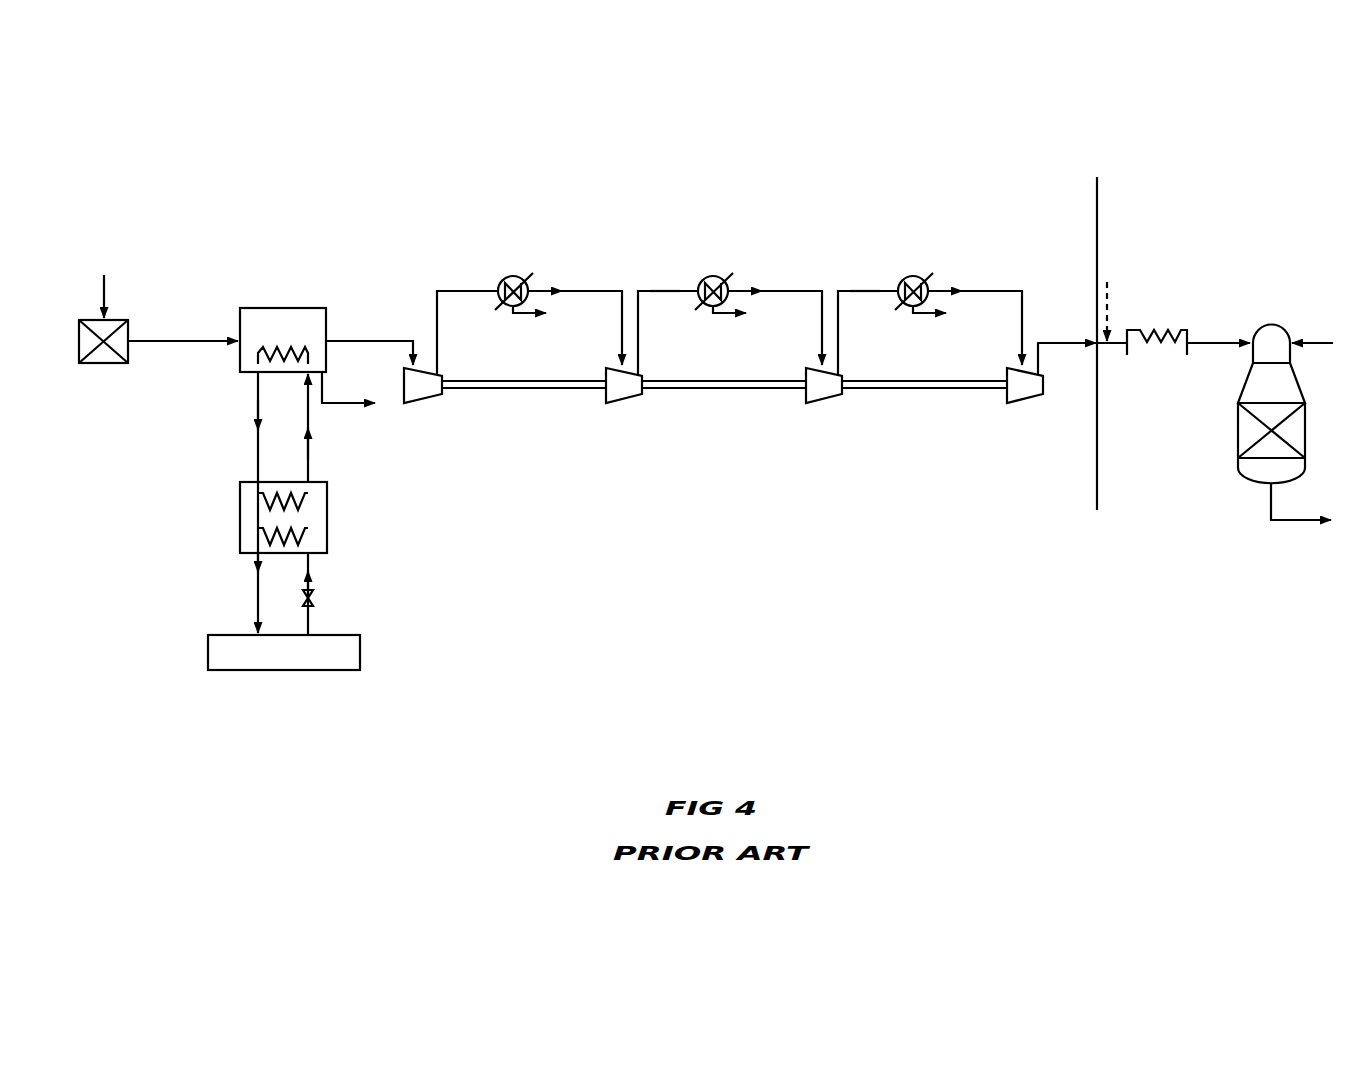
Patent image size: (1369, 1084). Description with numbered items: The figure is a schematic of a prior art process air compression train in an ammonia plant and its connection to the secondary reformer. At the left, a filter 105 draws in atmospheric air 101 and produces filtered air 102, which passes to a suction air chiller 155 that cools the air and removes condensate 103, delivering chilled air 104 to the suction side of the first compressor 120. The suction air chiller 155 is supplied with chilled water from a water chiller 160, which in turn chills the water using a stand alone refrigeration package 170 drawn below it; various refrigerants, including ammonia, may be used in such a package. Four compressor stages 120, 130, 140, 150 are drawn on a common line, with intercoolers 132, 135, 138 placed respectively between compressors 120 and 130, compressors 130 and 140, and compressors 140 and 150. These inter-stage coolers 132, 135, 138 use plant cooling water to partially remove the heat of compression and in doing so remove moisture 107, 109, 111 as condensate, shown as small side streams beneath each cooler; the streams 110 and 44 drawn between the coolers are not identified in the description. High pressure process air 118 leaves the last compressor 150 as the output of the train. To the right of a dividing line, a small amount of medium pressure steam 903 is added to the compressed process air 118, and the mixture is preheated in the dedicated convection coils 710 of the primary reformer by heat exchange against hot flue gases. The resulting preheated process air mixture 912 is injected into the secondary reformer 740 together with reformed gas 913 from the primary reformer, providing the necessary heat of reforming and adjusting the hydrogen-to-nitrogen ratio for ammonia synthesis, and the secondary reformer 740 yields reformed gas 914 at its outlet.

The atmospheric air 101 is at (106, 293).
The filtered air 102 is at (168, 342).
The condensate 103 is at (338, 410).
The chilled air 104 is at (370, 338).
The filter 105 is at (90, 318).
The moisture 107 is at (520, 316).
The moisture 109 is at (720, 316).
The stream 110 is at (680, 290).
The moisture 111 is at (920, 316).
The high pressure process air 118 is at (1075, 340).
The compressor 120 is at (427, 404).
The compressor 130 is at (625, 404).
The intercooler 132 is at (508, 277).
The intercooler 135 is at (708, 277).
The intercooler 138 is at (908, 277).
The compressor 140 is at (825, 404).
The compressor 150 is at (1027, 404).
The suction air chiller 155 is at (283, 308).
The water chiller 160 is at (240, 500).
The stand alone refrigeration package 170 is at (240, 635).
The stream 44 is at (880, 290).
The convection coils 710 is at (1155, 350).
The secondary reformer 740 is at (1235, 428).
The medium pressure steam 903 is at (1108, 295).
The preheated process air mixture 912 is at (1215, 340).
The reformed gas 913 is at (1320, 340).
The reformed gas 914 is at (1298, 522).